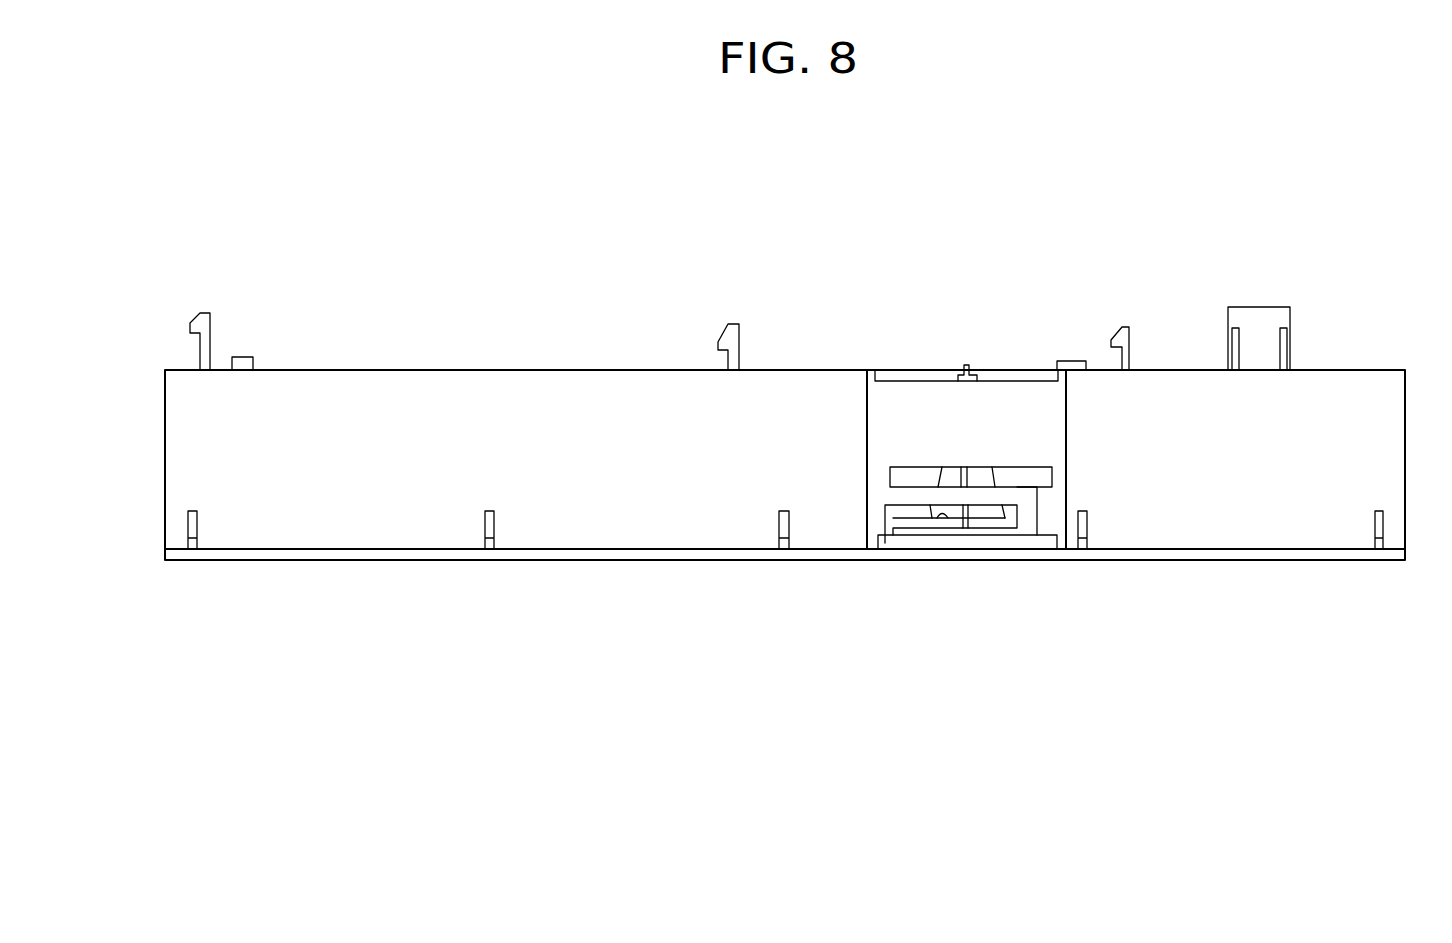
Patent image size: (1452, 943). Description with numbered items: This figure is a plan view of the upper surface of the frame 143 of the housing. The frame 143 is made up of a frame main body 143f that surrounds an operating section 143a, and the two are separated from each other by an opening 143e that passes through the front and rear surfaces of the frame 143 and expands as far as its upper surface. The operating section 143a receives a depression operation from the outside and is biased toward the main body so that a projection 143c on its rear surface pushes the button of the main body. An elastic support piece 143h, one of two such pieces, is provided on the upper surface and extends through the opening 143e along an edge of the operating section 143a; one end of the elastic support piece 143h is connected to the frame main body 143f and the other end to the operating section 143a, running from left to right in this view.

The frame 143 is at (673, 358).
The frame main body 143f is at (843, 490).
The projection 143c is at (967, 364).
The opening 143e is at (1005, 508).
The elastic support piece 143h is at (962, 495).
The operating section 143a is at (992, 538).